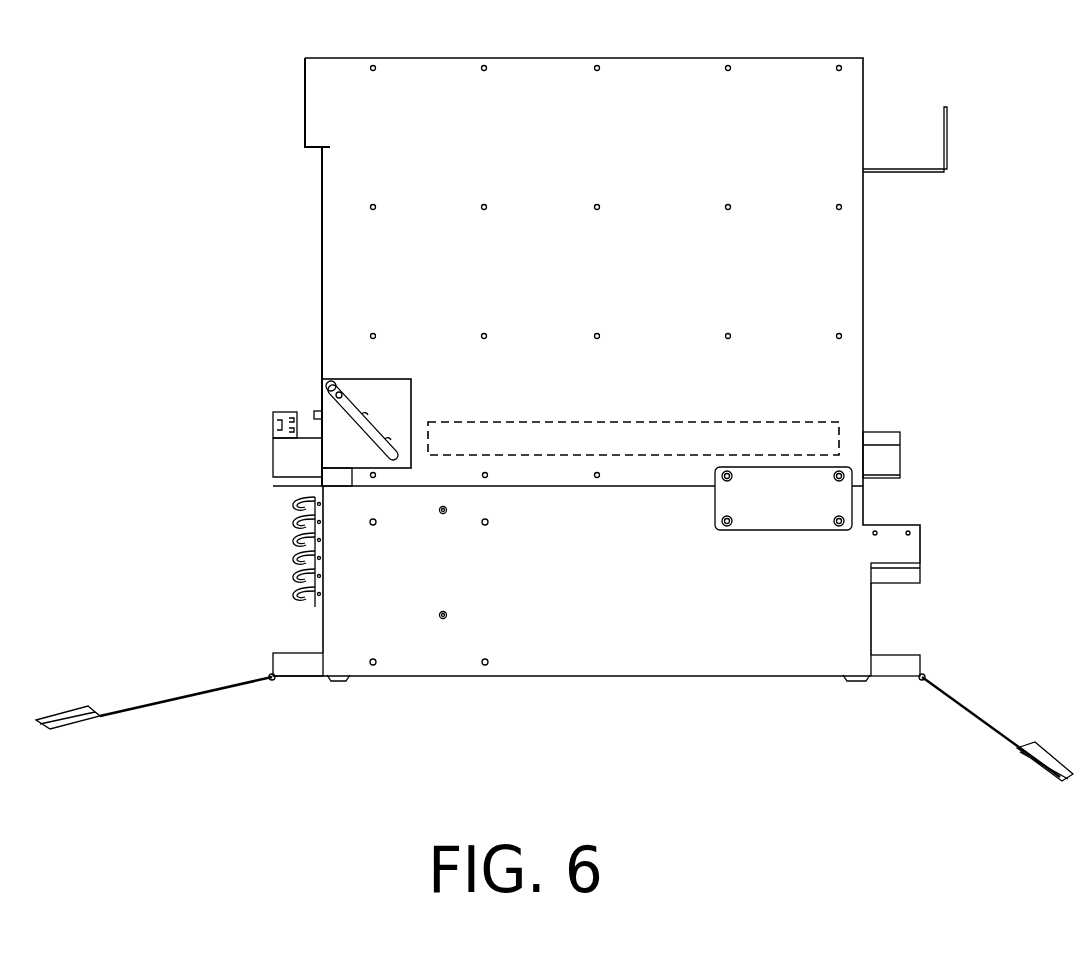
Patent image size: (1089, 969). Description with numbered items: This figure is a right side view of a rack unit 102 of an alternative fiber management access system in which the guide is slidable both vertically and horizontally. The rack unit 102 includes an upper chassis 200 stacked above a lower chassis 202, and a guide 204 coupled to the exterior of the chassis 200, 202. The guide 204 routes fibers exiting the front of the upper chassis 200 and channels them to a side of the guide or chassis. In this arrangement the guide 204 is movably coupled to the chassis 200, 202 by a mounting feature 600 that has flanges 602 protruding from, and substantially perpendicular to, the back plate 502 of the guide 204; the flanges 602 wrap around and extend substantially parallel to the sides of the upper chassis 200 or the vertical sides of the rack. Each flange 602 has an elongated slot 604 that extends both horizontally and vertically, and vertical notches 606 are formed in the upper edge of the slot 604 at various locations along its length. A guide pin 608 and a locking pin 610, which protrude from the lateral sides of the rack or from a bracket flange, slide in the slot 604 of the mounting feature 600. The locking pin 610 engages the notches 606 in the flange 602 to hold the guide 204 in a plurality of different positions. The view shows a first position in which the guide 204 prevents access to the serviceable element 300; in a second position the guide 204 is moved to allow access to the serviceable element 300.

The rack unit 102 is at (236, 80).
The upper chassis 200 is at (572, 145).
The lower chassis 202 is at (590, 593).
The guide 204 is at (273, 438).
The serviceable element 300 is at (638, 420).
The back plate 502 is at (316, 410).
The mounting feature 600 is at (389, 492).
The flange 602 is at (374, 395).
The slot 604 is at (380, 425).
The vertical notch 606 is at (392, 445).
The guide pin 608 is at (339, 391).
The locking pin 610 is at (331, 381).